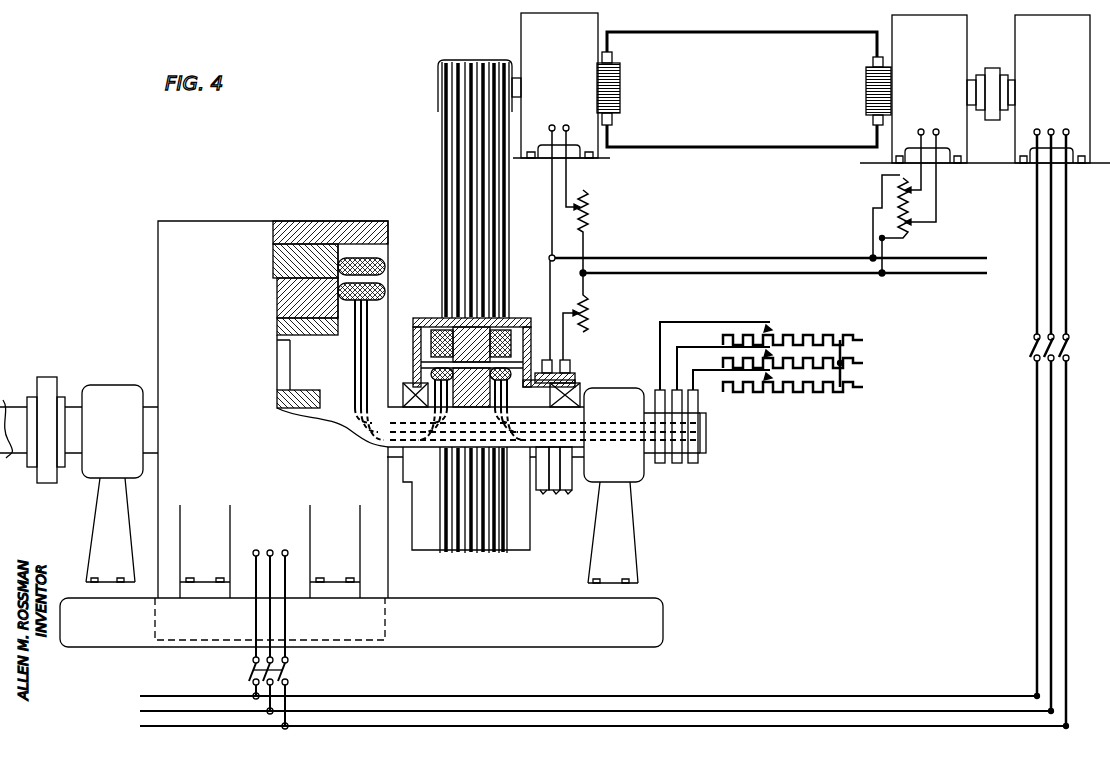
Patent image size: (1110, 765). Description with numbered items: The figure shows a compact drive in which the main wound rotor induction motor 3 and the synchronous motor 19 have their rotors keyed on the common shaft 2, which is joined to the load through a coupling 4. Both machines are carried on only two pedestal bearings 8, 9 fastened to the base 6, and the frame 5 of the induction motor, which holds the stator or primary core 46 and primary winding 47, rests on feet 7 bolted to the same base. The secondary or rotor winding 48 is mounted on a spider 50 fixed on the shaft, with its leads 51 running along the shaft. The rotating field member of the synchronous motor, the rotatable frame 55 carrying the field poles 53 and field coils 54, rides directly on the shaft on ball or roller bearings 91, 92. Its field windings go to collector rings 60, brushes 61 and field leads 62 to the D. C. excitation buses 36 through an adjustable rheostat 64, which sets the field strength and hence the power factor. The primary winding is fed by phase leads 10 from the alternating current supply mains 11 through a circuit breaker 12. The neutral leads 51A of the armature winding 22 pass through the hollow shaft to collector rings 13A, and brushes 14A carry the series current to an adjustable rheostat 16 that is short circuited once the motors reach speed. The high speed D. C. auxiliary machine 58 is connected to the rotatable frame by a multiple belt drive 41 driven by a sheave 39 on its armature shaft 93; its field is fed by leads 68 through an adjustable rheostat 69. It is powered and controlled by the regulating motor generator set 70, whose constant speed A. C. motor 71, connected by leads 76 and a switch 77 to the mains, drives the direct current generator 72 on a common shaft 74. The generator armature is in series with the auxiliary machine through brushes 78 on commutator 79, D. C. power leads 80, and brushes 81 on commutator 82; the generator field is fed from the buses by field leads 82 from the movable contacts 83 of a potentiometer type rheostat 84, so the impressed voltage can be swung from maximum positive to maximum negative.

The shaft 2 is at (78, 408).
The main wound rotor induction motor 3 is at (115, 253).
The coupling 4 is at (38, 383).
The frame 5 is at (158, 287).
The base 6 is at (647, 632).
The feet 7 is at (330, 560).
The pedestal bearing 8 is at (118, 392).
The pedestal bearing 9 is at (613, 397).
The phase leads 10 is at (270, 620).
The alternating current supply mains 11 is at (465, 727).
The circuit breaker 12 is at (290, 673).
The collector rings 13A is at (693, 464).
The brushes 14A is at (693, 390).
The adjustable rheostat 16 is at (825, 388).
The synchronous motor 19 is at (540, 567).
The armature winding 22 is at (562, 358).
The D. C. excitation buses 36 is at (947, 273).
The sheave 39 is at (440, 82).
The multiple belt drive 41 is at (455, 140).
The stator or primary core 46 is at (340, 256).
The primary winding 47 is at (383, 265).
The secondary or rotor winding 48 is at (377, 290).
The spider 50 is at (325, 328).
The leads 51 is at (367, 350).
The neutral leads 51A is at (517, 430).
The field poles 53 is at (458, 327).
The field coils 54 is at (432, 340).
The rotatable frame 55 is at (435, 327).
The D. C. auxiliary machine 58 is at (528, 28).
The collector rings 60 is at (565, 380).
The brushes 61 is at (567, 360).
The field leads 62 is at (562, 320).
The adjustable rheostat 64 is at (577, 300).
The leads 68 is at (566, 175).
The adjustable rheostat 69 is at (580, 215).
The regulating motor generator set 70 is at (843, 173).
The constant speed A. C. motor 71 is at (1025, 32).
The direct current generator 72 is at (893, 27).
The shaft 74 is at (970, 85).
The leads 76 is at (1066, 285).
The switch or circuit breaker 77 is at (1027, 347).
The brushes 78 is at (870, 62).
The commutator 79 is at (863, 93).
The D. C. power leads 80 is at (682, 30).
The brushes 81 is at (623, 58).
The commutator 82 is at (623, 90).
The movable contacts 83 is at (913, 220).
The potentiometer type rheostat 84 is at (907, 235).
The ball or roller bearing 91 is at (405, 385).
The ball or roller bearing 92 is at (573, 392).
The armature shaft 93 is at (517, 77).